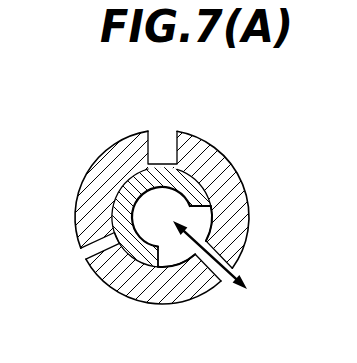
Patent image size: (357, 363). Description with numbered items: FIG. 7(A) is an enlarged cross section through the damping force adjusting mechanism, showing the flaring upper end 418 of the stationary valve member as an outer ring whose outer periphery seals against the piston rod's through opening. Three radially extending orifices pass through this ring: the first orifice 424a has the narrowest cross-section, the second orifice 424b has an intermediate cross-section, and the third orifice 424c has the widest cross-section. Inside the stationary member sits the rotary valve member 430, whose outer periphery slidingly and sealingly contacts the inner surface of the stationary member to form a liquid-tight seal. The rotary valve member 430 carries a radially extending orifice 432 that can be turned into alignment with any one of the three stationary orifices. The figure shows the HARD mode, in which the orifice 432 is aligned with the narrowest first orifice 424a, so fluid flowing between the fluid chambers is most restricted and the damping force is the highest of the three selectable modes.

The flaring upper end 418 is at (228, 159).
The rotary valve member 430 is at (113, 203).
The radially extending orifice 432 is at (199, 221).
The first orifice 424a is at (198, 267).
The second orifice 424b is at (88, 259).
The third orifice 424c is at (169, 143).